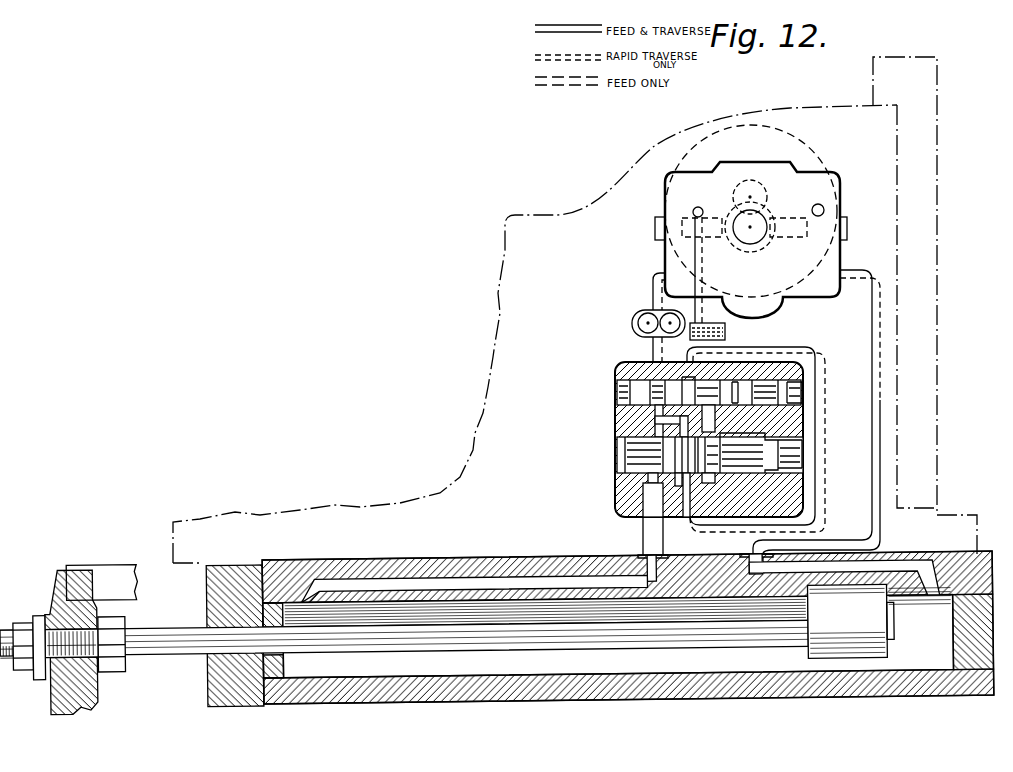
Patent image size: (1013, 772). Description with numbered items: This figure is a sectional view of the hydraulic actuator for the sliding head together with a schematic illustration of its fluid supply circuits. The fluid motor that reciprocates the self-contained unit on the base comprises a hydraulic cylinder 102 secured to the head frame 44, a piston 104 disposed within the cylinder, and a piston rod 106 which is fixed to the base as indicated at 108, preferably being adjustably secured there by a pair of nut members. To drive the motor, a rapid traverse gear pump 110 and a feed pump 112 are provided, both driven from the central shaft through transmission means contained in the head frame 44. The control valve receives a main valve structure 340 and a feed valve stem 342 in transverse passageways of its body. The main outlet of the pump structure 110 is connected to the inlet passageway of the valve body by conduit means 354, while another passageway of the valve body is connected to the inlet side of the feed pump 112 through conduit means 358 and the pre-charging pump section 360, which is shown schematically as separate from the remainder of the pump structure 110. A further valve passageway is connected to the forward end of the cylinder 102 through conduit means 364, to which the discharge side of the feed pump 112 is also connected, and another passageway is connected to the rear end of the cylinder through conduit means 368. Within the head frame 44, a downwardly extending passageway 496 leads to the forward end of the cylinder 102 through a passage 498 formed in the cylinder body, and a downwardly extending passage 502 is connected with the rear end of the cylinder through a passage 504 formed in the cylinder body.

The head frame 44 is at (650, 150).
The hydraulic cylinder 102 is at (800, 688).
The piston 104 is at (868, 636).
The piston rod 106 is at (402, 645).
The base fixing of piston rod 108 is at (43, 673).
The rapid traverse gear pump 110 is at (787, 132).
The feed pump 112 is at (803, 168).
The main valve structure 340 is at (623, 452).
The feed valve stem 342 is at (623, 393).
The conduit means 354 is at (826, 485).
The conduit means 358 is at (650, 298).
The pre-charging pump section 360 is at (630, 332).
The conduit means 364 is at (884, 415).
The conduit means 368 is at (637, 527).
The downwardly extending passageway 496 is at (750, 542).
The passage 498 is at (900, 572).
The downwardly extending passage 502 is at (650, 547).
The passage 504 is at (477, 582).